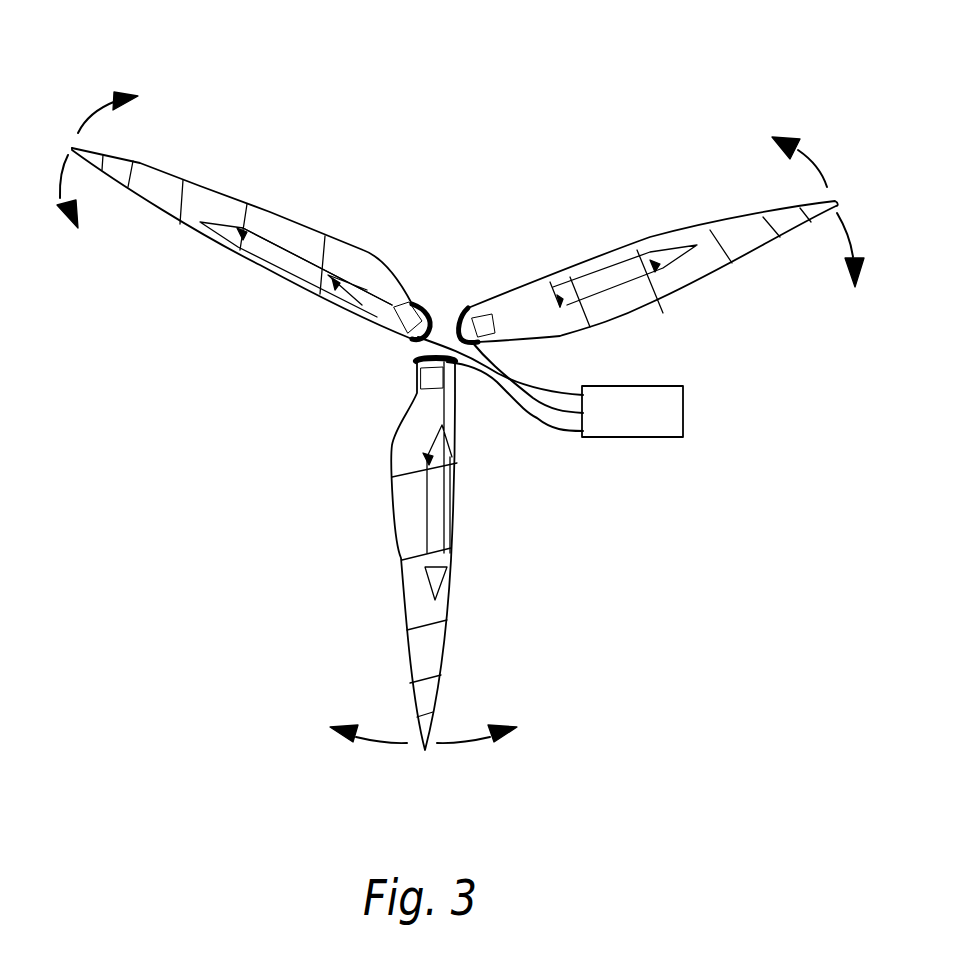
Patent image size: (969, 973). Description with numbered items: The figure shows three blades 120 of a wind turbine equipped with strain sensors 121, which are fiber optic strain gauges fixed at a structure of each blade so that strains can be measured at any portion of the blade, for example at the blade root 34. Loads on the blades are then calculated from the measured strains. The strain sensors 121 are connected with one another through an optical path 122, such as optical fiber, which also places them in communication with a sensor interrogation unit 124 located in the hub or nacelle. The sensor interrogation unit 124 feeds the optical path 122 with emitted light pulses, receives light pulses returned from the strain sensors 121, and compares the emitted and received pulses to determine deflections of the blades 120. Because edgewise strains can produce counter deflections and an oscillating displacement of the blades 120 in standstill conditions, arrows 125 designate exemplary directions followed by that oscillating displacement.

The blades 120 is at (152, 187).
The strain sensors 121 is at (247, 243).
The optical path 122 is at (307, 262).
The blade root 34 is at (411, 302).
The sensor interrogation unit 124 is at (655, 417).
The arrows 125 is at (93, 130).